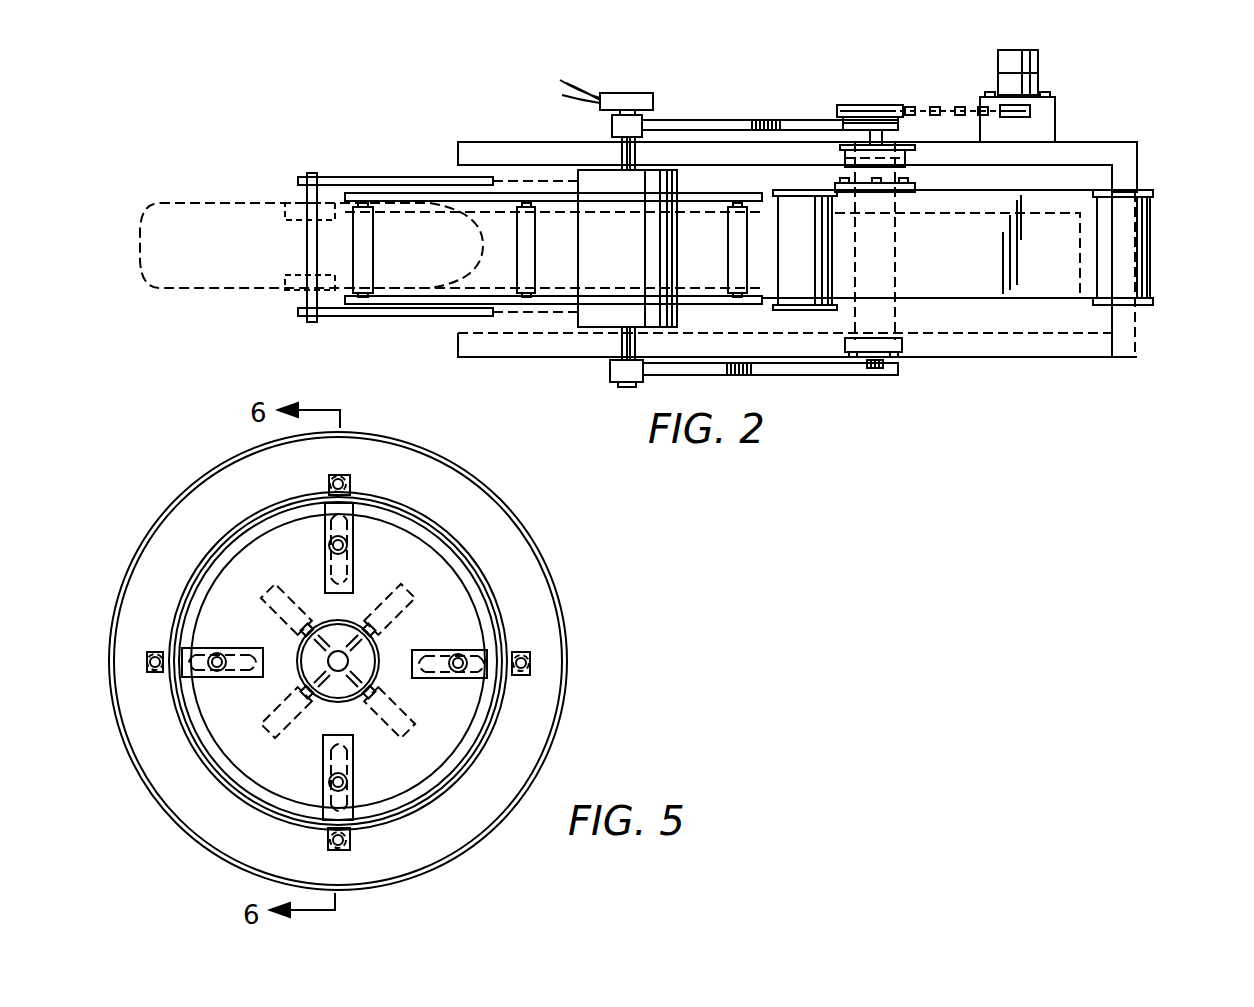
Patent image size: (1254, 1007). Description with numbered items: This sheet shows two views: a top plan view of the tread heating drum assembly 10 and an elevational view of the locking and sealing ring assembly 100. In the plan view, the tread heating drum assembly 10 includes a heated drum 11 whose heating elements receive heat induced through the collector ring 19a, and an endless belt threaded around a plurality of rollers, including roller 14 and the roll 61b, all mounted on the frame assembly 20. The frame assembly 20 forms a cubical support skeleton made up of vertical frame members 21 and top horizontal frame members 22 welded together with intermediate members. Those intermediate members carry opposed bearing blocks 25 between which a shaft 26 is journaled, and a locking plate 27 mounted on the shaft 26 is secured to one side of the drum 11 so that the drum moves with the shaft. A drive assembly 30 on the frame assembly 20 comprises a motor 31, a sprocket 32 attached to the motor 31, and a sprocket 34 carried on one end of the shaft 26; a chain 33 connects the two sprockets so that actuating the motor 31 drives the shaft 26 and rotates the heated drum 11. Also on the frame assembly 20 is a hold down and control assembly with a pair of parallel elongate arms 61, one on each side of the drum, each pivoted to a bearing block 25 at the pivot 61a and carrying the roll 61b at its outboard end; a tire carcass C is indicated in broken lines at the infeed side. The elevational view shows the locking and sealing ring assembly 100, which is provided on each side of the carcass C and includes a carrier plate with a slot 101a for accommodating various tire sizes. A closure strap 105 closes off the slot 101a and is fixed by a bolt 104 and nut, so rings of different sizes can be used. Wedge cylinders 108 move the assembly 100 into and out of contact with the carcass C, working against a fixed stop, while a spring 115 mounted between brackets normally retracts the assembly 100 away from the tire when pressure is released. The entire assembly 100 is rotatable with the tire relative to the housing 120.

In FIG. 2, the tread heating drum assembly 10 is at (1048, 312).
In FIG. 2, the heated drum 11 is at (1000, 292).
In FIG. 2, the roller 14 is at (1143, 271).
In FIG. 2, the collector ring 19a is at (625, 96).
In FIG. 2, the frame assembly 20 is at (1152, 163).
In FIG. 2, the vertical frame member 21 is at (1120, 350).
In FIG. 2, the top horizontal frame member 22 is at (1087, 350).
In FIG. 2, the bearing block 25 is at (840, 150).
In FIG. 2, the shaft 26 is at (890, 316).
In FIG. 2, the locking plate 27 is at (936, 186).
In FIG. 2, the drive assembly 30 is at (1070, 96).
In FIG. 2, the motor 31 is at (1036, 66).
In FIG. 2, the sprocket 32 is at (1016, 120).
In FIG. 2, the chain 33 is at (935, 105).
In FIG. 2, the sprocket 34 is at (880, 103).
In FIG. 2, the elongate arm 61 is at (715, 124).
In FIG. 2, the pivot 61a is at (855, 388).
In FIG. 2, the roll 61b is at (595, 322).
In FIG. 2, the carcass C is at (192, 290).
In FIG. 5, the locking and sealing ring assembly 100 is at (512, 577).
In FIG. 5, the slot 101a is at (437, 674).
In FIG. 5, the bolt 104 is at (348, 545).
In FIG. 5, the closure strap 105 is at (478, 676).
In FIG. 5, the wedge cylinder 108 is at (283, 728).
In FIG. 5, the spring 115 is at (540, 663).
In FIG. 5, the housing 120 is at (563, 610).